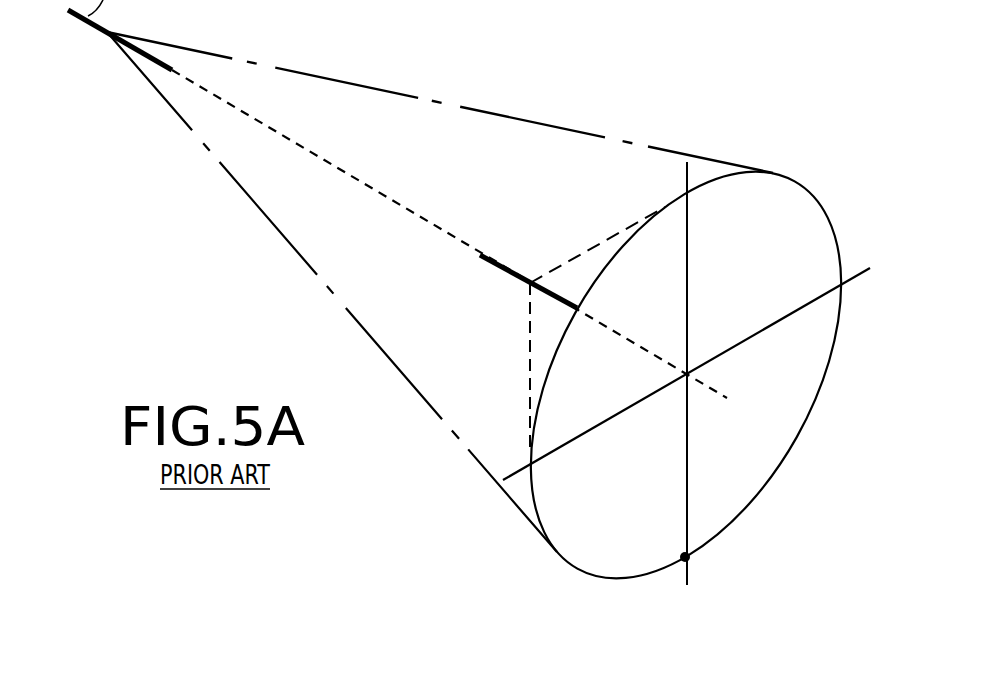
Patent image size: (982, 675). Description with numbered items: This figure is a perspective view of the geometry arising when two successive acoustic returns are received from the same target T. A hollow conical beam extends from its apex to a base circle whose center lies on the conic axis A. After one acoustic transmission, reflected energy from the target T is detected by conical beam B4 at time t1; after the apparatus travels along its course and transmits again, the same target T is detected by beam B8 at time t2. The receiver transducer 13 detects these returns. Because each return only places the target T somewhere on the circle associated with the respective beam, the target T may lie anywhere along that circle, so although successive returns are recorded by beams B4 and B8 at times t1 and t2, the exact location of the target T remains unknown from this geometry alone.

The time t1 is at (120, 41).
The time t2 is at (505, 303).
The receiver transducer 13 is at (494, 257).
The conical beam B4 is at (594, 130).
The conical beam B8 is at (592, 249).
The conic axis A is at (713, 390).
The target T is at (690, 557).